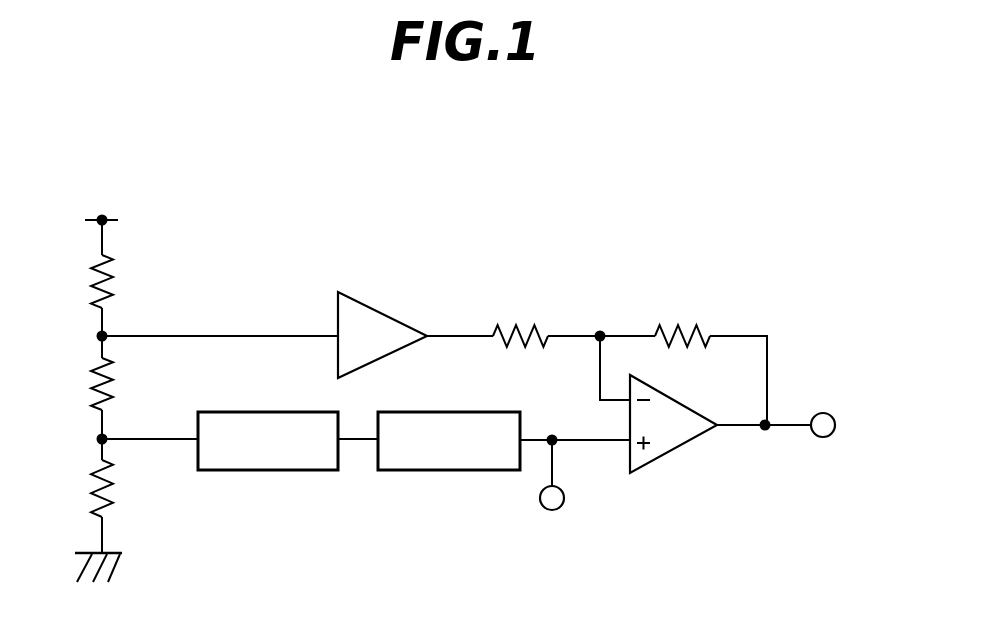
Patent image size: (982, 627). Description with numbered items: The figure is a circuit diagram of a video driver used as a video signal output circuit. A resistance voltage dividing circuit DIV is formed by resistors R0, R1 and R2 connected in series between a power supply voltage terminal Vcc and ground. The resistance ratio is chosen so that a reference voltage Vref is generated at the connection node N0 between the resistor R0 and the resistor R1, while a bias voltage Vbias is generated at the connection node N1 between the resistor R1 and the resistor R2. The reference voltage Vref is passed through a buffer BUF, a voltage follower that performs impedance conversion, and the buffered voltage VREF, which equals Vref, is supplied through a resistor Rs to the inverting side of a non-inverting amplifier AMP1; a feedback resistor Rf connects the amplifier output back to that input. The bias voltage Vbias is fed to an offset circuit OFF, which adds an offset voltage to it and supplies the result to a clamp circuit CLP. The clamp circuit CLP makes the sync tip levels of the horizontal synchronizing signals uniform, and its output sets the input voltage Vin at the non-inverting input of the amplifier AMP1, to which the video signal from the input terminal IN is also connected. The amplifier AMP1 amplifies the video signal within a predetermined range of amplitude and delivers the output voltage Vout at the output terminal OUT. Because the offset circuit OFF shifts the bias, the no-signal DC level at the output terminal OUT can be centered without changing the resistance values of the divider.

The power supply voltage terminal Vcc is at (102, 205).
The resistance voltage dividing circuit DIV is at (147, 247).
The resistor R0 is at (118, 281).
The resistor R1 is at (118, 384).
The resistor R2 is at (118, 488).
The connection node N0 is at (97, 334).
The connection node N1 is at (97, 438).
The reference voltage Vref is at (220, 320).
The buffer BUF is at (372, 301).
The input voltage of the non-inverting amplifier VREF is at (460, 322).
The resistor Rs is at (546, 354).
The resistor Rf is at (681, 375).
The non-inverting amplifier AMP1 is at (677, 447).
The output voltage Vout is at (802, 432).
The output terminal OUT is at (826, 414).
The bias voltage Vbias is at (150, 425).
The offset circuit OFF is at (262, 411).
The clamp circuit CLP is at (442, 471).
The input voltage Vin is at (575, 428).
The input terminal IN is at (565, 497).